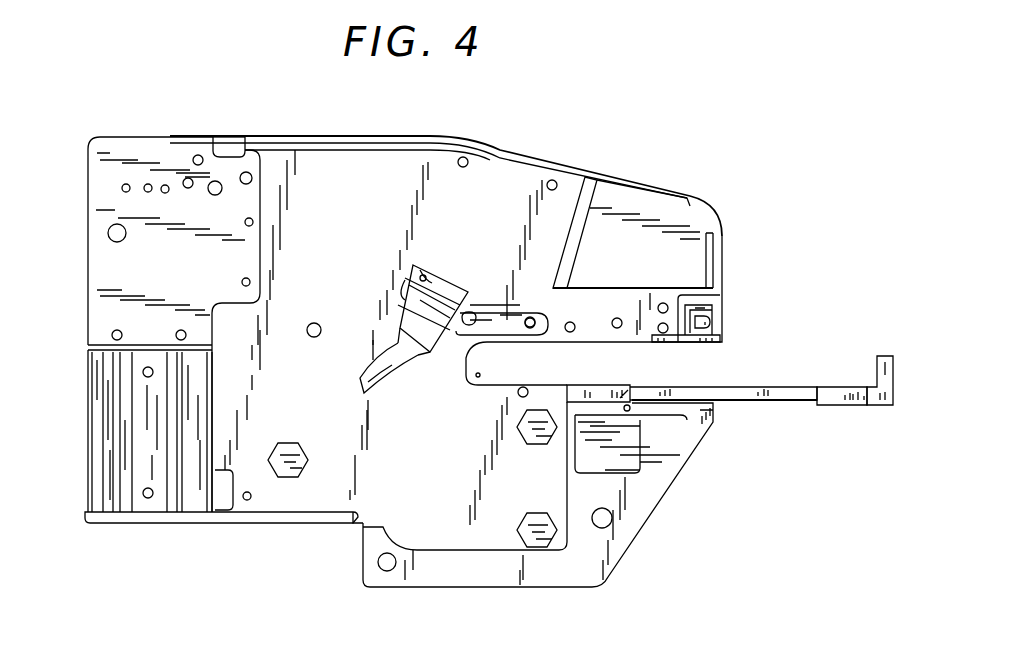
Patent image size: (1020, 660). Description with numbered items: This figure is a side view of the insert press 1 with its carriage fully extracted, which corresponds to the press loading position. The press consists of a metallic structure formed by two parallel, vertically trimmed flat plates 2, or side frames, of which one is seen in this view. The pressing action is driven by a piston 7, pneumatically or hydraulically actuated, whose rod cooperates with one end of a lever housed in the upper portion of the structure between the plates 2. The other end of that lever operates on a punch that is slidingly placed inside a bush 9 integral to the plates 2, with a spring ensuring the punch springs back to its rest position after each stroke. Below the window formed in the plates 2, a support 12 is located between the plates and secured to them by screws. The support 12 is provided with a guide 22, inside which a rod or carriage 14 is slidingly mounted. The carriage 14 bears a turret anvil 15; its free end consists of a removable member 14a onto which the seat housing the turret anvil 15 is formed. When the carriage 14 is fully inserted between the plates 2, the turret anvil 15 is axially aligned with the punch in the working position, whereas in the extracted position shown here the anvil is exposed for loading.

The insert press 1 is at (648, 175).
The flat plate 2 is at (328, 168).
The piston 7 is at (102, 436).
The bush 9 is at (717, 322).
The support 12 is at (660, 455).
The carriage 14 is at (772, 402).
The removable member 14a is at (838, 405).
The turret anvil 15 is at (878, 358).
The guide 22 is at (630, 386).